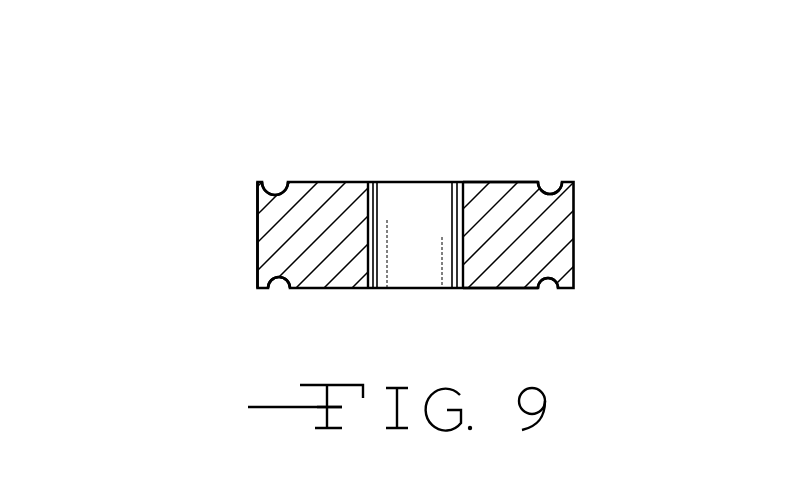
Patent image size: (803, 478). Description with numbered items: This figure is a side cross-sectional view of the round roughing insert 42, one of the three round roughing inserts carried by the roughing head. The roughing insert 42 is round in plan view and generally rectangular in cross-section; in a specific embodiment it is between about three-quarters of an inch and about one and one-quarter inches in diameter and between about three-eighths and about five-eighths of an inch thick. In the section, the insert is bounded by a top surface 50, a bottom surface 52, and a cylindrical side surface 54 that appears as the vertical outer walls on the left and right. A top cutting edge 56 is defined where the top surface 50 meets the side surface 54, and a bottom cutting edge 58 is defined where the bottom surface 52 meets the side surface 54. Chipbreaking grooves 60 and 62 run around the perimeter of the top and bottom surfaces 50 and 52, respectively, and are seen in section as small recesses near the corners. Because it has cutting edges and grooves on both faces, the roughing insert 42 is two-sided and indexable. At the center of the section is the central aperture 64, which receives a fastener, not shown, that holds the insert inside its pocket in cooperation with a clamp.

The roughing insert 42 is at (160, 189).
The top surface 50 is at (492, 181).
The bottom surface 52 is at (485, 289).
The cylindrical side surface 54 is at (257, 244).
The top cutting edge 56 is at (257, 181).
The bottom cutting edge 58 is at (257, 291).
The chipbreaking groove 60 is at (549, 188).
The chipbreaking groove 62 is at (550, 280).
The central aperture 64 is at (373, 220).